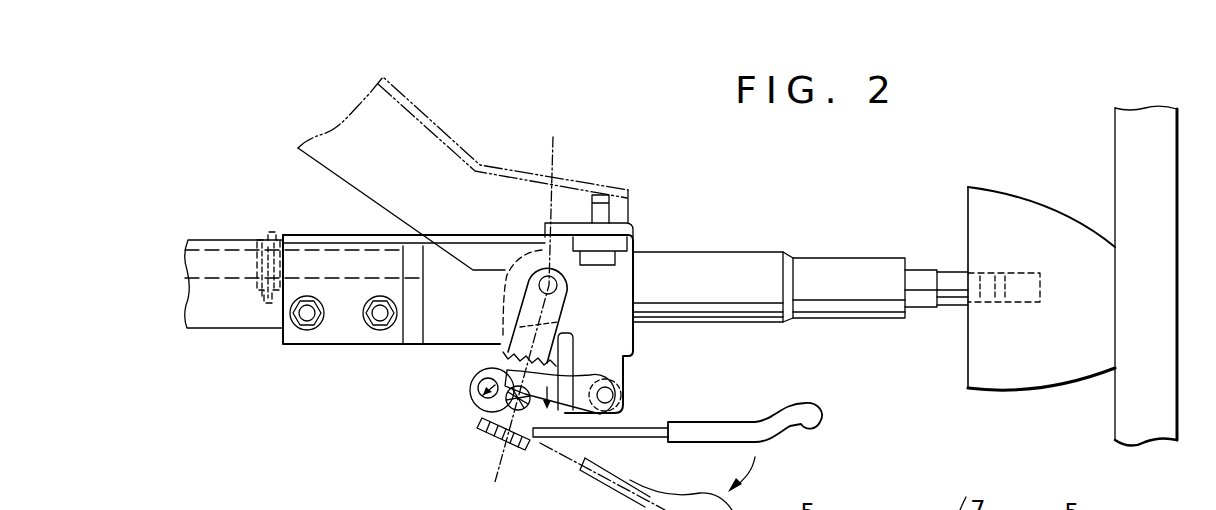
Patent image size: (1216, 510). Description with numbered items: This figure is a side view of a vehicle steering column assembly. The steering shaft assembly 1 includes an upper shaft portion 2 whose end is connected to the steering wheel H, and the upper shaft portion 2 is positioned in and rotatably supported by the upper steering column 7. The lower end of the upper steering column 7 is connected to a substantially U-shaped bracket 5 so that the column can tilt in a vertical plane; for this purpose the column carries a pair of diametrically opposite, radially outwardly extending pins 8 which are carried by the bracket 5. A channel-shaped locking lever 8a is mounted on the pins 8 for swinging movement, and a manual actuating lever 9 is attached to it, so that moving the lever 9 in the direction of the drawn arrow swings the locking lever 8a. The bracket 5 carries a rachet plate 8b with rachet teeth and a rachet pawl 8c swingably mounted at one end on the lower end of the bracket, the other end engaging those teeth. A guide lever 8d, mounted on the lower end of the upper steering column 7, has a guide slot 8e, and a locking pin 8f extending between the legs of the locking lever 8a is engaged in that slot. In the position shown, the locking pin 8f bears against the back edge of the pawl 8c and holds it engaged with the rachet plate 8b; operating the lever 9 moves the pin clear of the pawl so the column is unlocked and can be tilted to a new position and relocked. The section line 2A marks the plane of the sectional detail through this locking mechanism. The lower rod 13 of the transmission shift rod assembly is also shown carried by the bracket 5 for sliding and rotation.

The steering shaft assembly 1 is at (923, 247).
The upper shaft portion 2 is at (948, 270).
The section line 2A- 2A is at (521, 307).
The bracket 5 is at (636, 246).
The upper steering column 7 is at (866, 258).
The pin 8 is at (560, 286).
The locking lever 8a is at (556, 310).
The rachet plate 8b is at (501, 348).
The rachet pawl 8c is at (615, 379).
The guide lever 8d is at (470, 386).
The guide slot 8e is at (483, 400).
The locking pin 8f is at (482, 410).
The manual actuating lever 9 is at (716, 430).
The lower rod 13 is at (242, 252).
The steering wheel H is at (1160, 170).